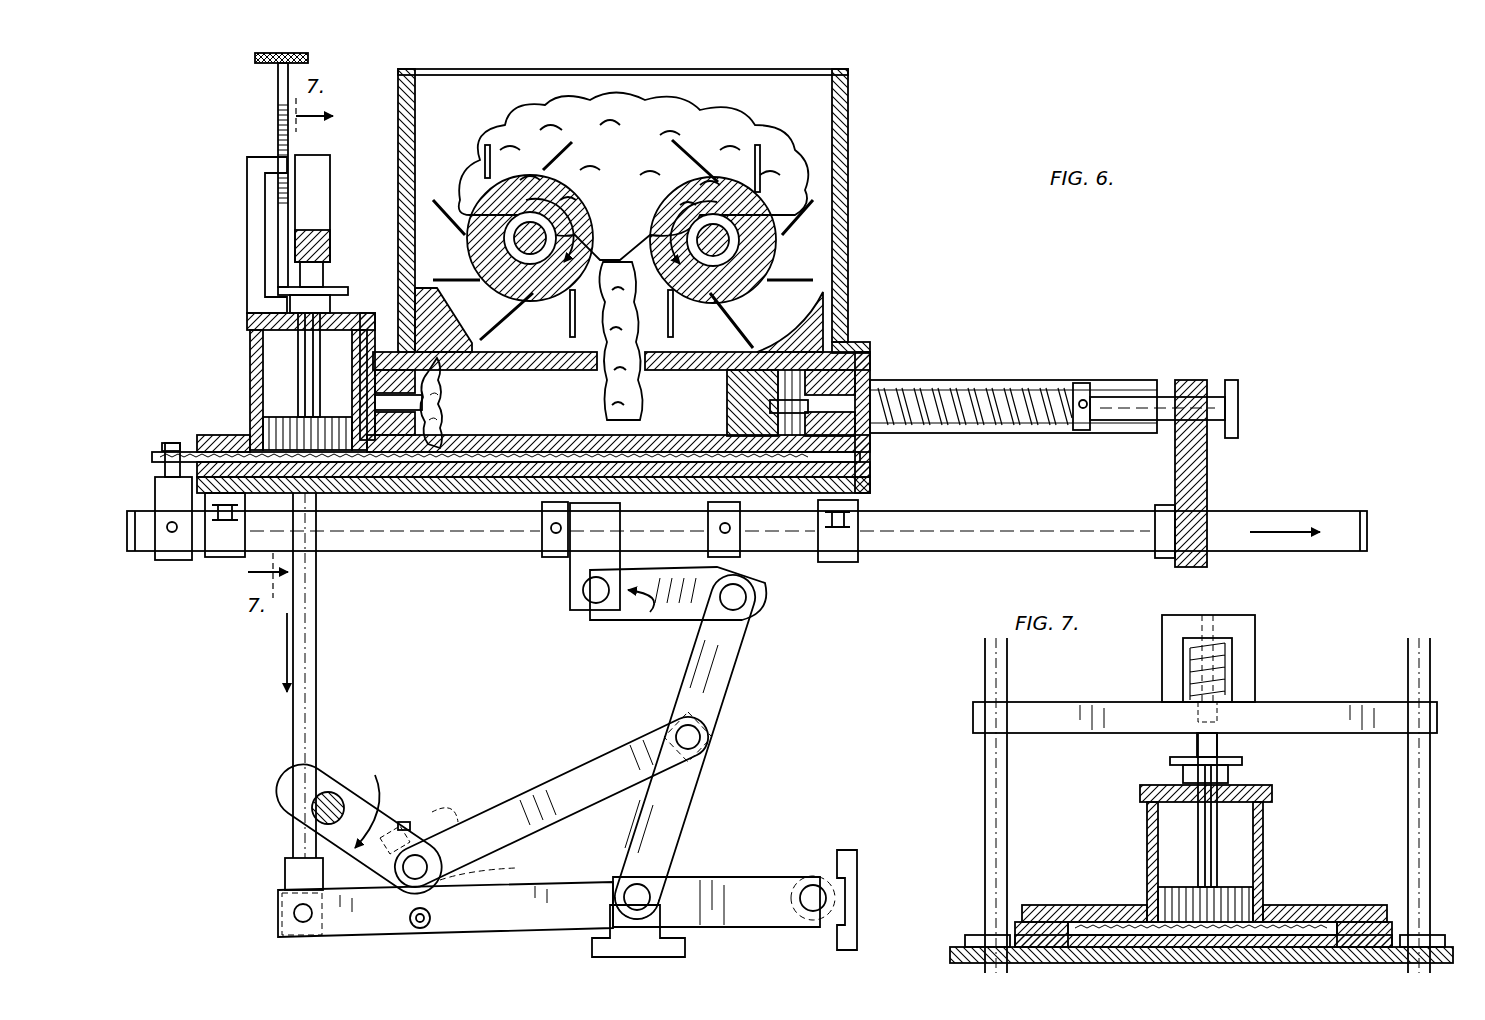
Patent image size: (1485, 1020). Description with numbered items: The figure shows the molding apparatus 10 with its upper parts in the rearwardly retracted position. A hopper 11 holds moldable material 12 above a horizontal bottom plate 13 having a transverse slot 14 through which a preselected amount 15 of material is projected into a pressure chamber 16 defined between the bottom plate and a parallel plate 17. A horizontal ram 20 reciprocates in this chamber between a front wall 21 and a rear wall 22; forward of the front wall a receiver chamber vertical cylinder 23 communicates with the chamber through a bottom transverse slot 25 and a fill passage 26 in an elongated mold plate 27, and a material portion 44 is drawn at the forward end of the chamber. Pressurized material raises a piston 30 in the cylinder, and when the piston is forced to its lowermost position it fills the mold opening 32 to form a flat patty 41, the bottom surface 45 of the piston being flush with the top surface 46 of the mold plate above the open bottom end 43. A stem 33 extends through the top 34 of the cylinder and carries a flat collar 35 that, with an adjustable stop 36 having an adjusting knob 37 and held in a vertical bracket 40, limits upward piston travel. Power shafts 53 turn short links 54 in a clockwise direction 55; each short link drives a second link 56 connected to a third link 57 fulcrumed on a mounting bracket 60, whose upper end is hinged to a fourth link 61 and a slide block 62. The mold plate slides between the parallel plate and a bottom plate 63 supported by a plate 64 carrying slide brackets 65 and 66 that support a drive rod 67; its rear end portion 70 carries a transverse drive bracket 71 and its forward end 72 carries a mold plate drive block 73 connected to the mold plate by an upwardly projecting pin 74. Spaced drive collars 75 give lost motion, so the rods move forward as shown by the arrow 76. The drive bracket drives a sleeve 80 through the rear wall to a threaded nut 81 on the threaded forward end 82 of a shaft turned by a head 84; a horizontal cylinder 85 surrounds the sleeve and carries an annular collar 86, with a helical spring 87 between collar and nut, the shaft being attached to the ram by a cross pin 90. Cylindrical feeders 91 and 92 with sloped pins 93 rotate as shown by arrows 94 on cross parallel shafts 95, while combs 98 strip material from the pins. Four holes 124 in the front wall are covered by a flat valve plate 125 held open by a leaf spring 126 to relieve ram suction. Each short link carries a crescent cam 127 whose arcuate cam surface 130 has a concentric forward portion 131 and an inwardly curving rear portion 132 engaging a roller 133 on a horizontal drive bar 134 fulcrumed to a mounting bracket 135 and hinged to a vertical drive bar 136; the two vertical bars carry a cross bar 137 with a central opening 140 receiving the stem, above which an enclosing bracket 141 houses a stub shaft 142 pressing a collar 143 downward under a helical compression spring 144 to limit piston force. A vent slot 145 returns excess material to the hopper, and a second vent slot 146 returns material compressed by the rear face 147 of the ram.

In FIG. 6, the molding apparatus 10 is at (868, 212).
In FIG. 6, the hopper 11 is at (848, 115).
In FIG. 6, the moldable material 12 is at (720, 118).
In FIG. 6, the bottom plate 13 is at (684, 385).
In FIG. 6, the transverse opening or slot 14 is at (568, 417).
In FIG. 6, the preselected amount of material 15 is at (660, 417).
In FIG. 6, the pressure chamber 16 is at (539, 382).
In FIG. 6, the parallel plate 17 is at (526, 417).
In FIG. 7, the parallel plate 17 is at (1285, 905).
In FIG. 6, the horizontal ram 20 is at (820, 427).
In FIG. 6, the front wall 21 is at (368, 330).
In FIG. 6, the rear wall 22 is at (865, 352).
In FIG. 6, the receiver chamber vertical cylinder 23 is at (250, 345).
In FIG. 7, the receiver chamber vertical cylinder 23 is at (1263, 840).
In FIG. 6, the bottom transverse slot 25 is at (440, 395).
In FIG. 6, the fill passage 26 is at (590, 486).
In FIG. 6, the mold plate 27 is at (701, 417).
In FIG. 7, the mold plate 27 is at (1318, 920).
In FIG. 6, the piston 30 is at (283, 415).
In FIG. 7, the piston 30 is at (1172, 885).
In FIG. 6, the mold opening 32 is at (230, 440).
In FIG. 6, the stem 33 is at (315, 345).
In FIG. 7, the stem 33 is at (1215, 820).
In FIG. 6, the top of the cylinder 34 is at (250, 322).
In FIG. 7, the top of the cylinder 34 is at (1250, 782).
In FIG. 6, the flat collar 35 is at (282, 296).
In FIG. 6, the adjustable stop 36 is at (276, 196).
In FIG. 6, the adjusting knob 37 is at (258, 62).
In FIG. 6, the vertical bracket 40 is at (247, 235).
In FIG. 6, the flat patty 41 is at (345, 465).
In FIG. 6, the open bottom end 43 is at (268, 430).
In FIG. 6, the plug portion 44 is at (438, 440).
In FIG. 6, the bottom surface of the piston 45 is at (285, 458).
In FIG. 7, the bottom surface of the piston 45 is at (1185, 912).
In FIG. 6, the top surface of the mold plate 46 is at (485, 430).
In FIG. 7, the top surface of the mold plate 46 is at (1085, 922).
In FIG. 6, the power shaft 53 is at (330, 795).
In FIG. 6, the short link 54 is at (381, 792).
In FIG. 6, the clockwise direction 55 is at (395, 825).
In FIG. 6, the second link 56 is at (592, 765).
In FIG. 6, the third link 57 is at (688, 790).
In FIG. 6, the mounting bracket 60 is at (624, 897).
In FIG. 6, the fourth link 61 is at (672, 617).
In FIG. 6, the slide block 62 is at (575, 597).
In FIG. 6, the bottom plate 63 is at (655, 488).
In FIG. 6, the plate 64 is at (455, 470).
In FIG. 6, the slide bracket 65 is at (222, 548).
In FIG. 6, the slide bracket 66 is at (842, 565).
In FIG. 6, the drive rod 67 is at (958, 520).
In FIG. 6, the rear end portion of the rod 70 is at (1297, 515).
In FIG. 6, the transverse drive bracket 71 is at (1190, 470).
In FIG. 6, the forward end of the slide rod 72 is at (140, 548).
In FIG. 6, the mold plate drive block 73 is at (155, 500).
In FIG. 6, the upwardly projecting pin 74 is at (163, 452).
In FIG. 6, the drive collar 75 is at (545, 548).
In FIG. 6, the arrow 76 is at (628, 621).
In FIG. 6, the sleeve 80 is at (1160, 397).
In FIG. 6, the threaded nut 81 is at (870, 385).
In FIG. 6, the threaded forward end 82 is at (862, 440).
In FIG. 6, the head 84 is at (1232, 380).
In FIG. 6, the horizontal cylinder 85 is at (1012, 380).
In FIG. 6, the annular collar 86 is at (1083, 383).
In FIG. 6, the helical spring 87 is at (1010, 432).
In FIG. 6, the cross pin 90 is at (785, 445).
In FIG. 6, the cylindrical feeder 91 is at (467, 250).
In FIG. 6, the cylindrical feeder 92 is at (765, 255).
In FIG. 6, the pins 93 is at (485, 160).
In FIG. 6, the arrows 94 is at (665, 228).
In FIG. 6, the cross parallel shafts 95 is at (614, 208).
In FIG. 6, the combs 98 is at (580, 320).
In FIG. 6, the holes 124 is at (370, 385).
In FIG. 6, the flat valve plate 125 is at (435, 345).
In FIG. 6, the leaf spring 126 is at (372, 405).
In FIG. 6, the crescent cam 127 is at (440, 830).
In FIG. 6, the arcuate cam surface 130 is at (470, 850).
In FIG. 6, the forward portion of the cam surface 131 is at (506, 864).
In FIG. 6, the rear portion of the cam surface 132 is at (448, 825).
In FIG. 6, the roller 133 is at (432, 916).
In FIG. 6, the horizontal drive bar 134 is at (722, 880).
In FIG. 6, the mounting bracket 135 is at (830, 850).
In FIG. 6, the vertical drive bar 136 is at (316, 678).
In FIG. 7, the vertical drive bar 136 is at (985, 797).
In FIG. 6, the cross bar 137 is at (320, 240).
In FIG. 7, the cross bar 137 is at (1365, 700).
In FIG. 7, the central opening 140 is at (1242, 720).
In FIG. 6, the enclosing bracket 141 is at (312, 175).
In FIG. 7, the enclosing bracket 141 is at (1255, 633).
In FIG. 7, the stub shaft 142 is at (1188, 665).
In FIG. 7, the collar 143 is at (1232, 690).
In FIG. 7, the helical compression spring 144 is at (1215, 640).
In FIG. 6, the vent slot 145 is at (492, 315).
In FIG. 6, the second vent slot 146 is at (848, 305).
In FIG. 6, the rear face of the ram 147 is at (830, 403).